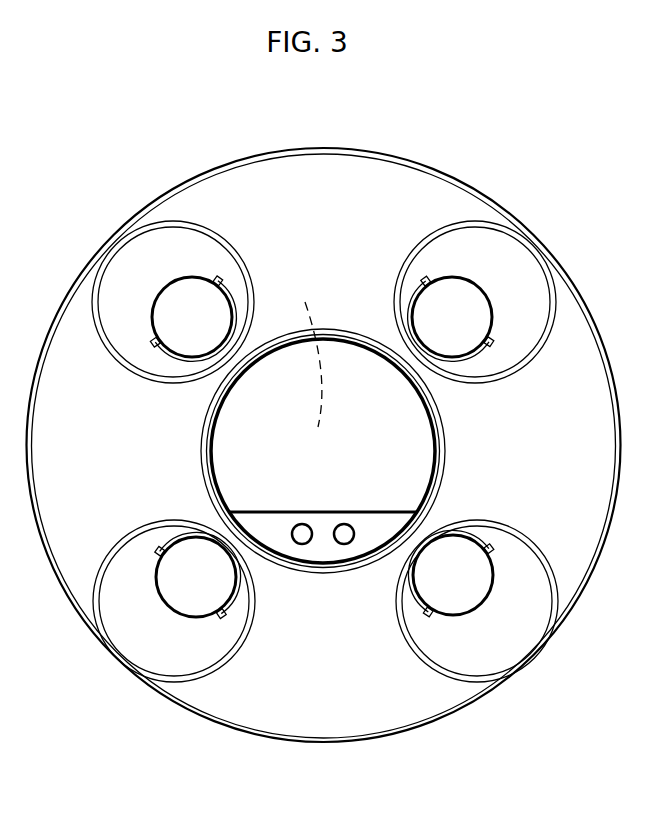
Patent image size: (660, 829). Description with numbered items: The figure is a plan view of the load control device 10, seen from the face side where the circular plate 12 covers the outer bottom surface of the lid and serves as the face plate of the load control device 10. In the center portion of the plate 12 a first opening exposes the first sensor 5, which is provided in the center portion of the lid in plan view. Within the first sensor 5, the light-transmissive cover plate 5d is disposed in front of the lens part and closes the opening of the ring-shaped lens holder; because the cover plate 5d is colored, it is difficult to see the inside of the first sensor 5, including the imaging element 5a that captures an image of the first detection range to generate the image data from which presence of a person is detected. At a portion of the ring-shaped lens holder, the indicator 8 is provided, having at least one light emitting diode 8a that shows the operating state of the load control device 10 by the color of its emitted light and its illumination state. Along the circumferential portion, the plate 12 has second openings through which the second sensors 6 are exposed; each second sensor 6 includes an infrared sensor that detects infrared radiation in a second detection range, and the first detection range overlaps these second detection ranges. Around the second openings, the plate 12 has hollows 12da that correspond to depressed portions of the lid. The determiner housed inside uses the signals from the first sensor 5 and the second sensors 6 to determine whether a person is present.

The load control device 10 is at (568, 158).
The plate 12 is at (320, 713).
The hollow 12da is at (501, 632).
The first sensor 5 is at (295, 443).
The imaging element 5a is at (307, 352).
The cover plate 5d is at (402, 445).
The second sensor 6 is at (177, 315).
The indicator 8 is at (317, 543).
The light emitting diode 8a is at (342, 532).